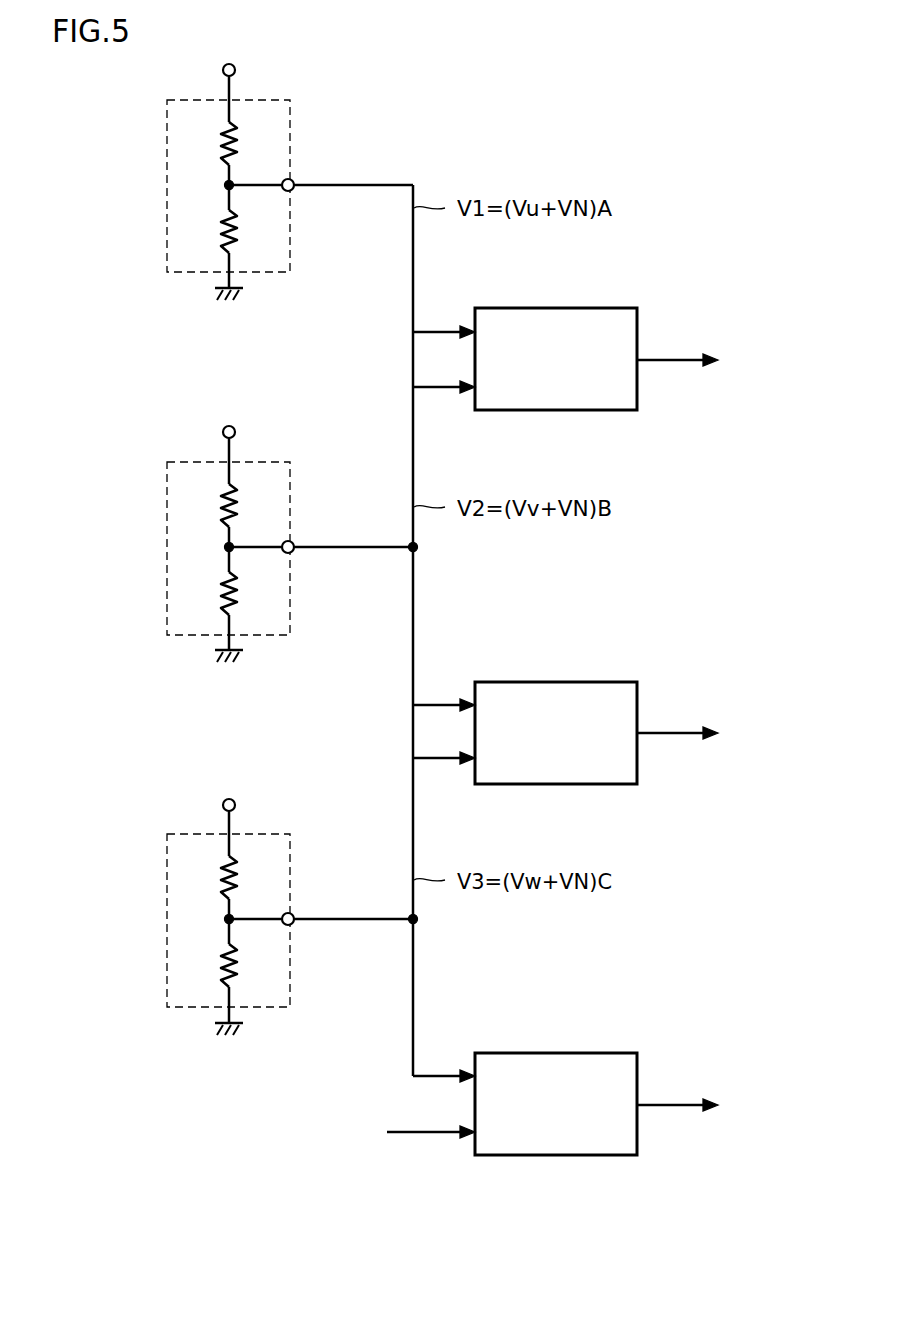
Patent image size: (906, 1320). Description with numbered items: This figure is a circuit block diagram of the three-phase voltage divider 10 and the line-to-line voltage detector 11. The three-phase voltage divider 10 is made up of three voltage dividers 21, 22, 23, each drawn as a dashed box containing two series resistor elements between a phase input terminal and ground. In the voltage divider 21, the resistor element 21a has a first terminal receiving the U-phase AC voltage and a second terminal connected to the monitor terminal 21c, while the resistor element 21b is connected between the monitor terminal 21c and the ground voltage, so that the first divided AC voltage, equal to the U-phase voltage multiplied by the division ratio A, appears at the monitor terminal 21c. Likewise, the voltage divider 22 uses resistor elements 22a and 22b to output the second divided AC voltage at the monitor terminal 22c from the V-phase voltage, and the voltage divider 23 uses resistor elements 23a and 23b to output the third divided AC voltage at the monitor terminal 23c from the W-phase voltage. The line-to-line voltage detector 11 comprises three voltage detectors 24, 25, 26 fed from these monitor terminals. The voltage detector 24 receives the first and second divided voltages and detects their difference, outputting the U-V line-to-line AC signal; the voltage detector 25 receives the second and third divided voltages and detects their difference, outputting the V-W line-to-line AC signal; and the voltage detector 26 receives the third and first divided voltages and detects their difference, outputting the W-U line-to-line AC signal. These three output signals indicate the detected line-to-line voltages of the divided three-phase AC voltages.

The three-phase voltage divider 10 is at (128, 1168).
The line-to-line voltage detector 11 is at (455, 1168).
The voltage divider 21 is at (167, 100).
The resistor element 21a is at (222, 139).
The resistor element 21b is at (222, 230).
The monitor terminal 21c is at (291, 190).
The voltage divider 22 is at (167, 462).
The resistor element 22a is at (222, 501).
The resistor element 22b is at (222, 594).
The monitor terminal 22c is at (291, 552).
The voltage divider 23 is at (167, 834).
The resistor element 23a is at (222, 873).
The resistor element 23b is at (222, 966).
The monitor terminal 23c is at (291, 924).
The voltage detector 24 is at (558, 318).
The voltage detector 25 is at (558, 691).
The voltage detector 26 is at (558, 1062).